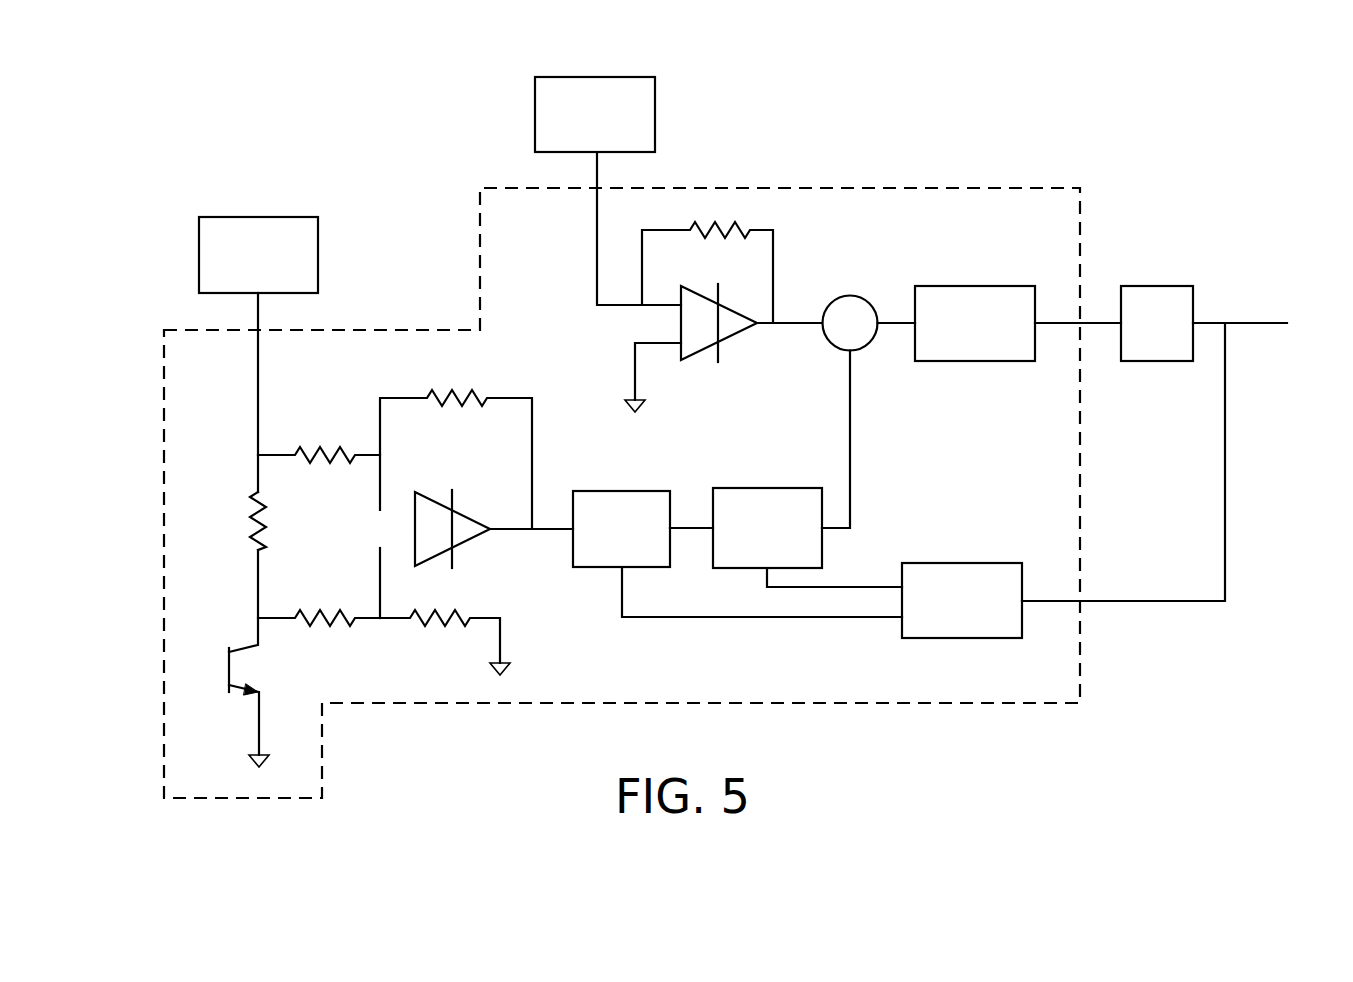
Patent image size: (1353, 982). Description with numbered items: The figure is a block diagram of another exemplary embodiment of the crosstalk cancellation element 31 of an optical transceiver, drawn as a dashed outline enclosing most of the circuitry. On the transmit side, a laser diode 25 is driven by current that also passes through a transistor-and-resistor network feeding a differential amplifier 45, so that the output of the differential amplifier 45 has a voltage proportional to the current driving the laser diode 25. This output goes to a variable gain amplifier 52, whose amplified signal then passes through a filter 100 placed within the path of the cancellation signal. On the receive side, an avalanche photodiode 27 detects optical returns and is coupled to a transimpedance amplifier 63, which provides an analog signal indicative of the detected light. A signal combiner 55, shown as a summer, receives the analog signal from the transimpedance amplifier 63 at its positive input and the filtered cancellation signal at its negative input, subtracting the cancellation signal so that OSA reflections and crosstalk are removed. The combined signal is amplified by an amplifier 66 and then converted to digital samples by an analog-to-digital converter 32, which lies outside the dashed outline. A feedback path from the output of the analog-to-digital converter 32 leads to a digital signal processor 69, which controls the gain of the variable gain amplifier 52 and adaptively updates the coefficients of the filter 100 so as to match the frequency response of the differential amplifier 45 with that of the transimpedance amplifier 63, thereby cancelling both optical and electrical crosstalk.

The laser diode 25 is at (268, 217).
The avalanche photodiode (APD) 27 is at (605, 77).
The crosstalk cancellation element 31 is at (1013, 188).
The analog-to-digital (A/D) converter 32 is at (1155, 286).
The differential amplifier 45 is at (470, 540).
The variable gain amplifier (VGA) 52 is at (630, 491).
The signal combiner 55 is at (848, 296).
The transimpedance amplifier 63 is at (733, 338).
The amplifier 66 is at (975, 286).
The digital signal processor (DSP) 69 is at (972, 563).
The filter 100 is at (742, 488).